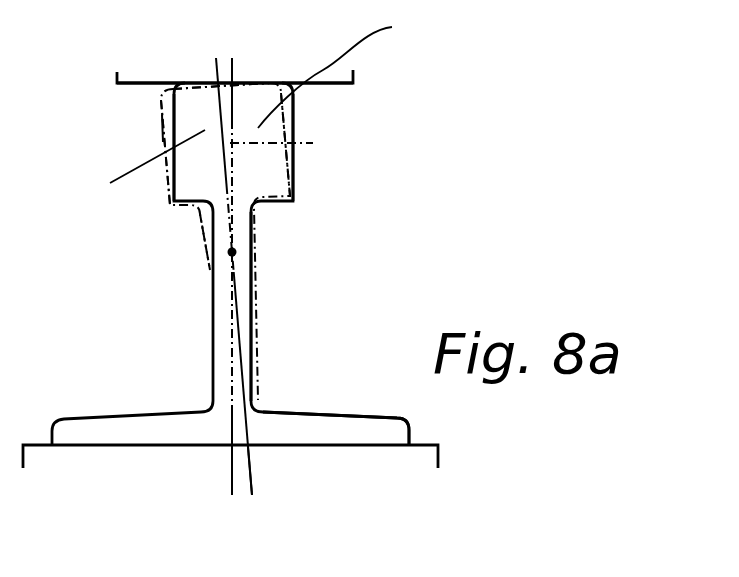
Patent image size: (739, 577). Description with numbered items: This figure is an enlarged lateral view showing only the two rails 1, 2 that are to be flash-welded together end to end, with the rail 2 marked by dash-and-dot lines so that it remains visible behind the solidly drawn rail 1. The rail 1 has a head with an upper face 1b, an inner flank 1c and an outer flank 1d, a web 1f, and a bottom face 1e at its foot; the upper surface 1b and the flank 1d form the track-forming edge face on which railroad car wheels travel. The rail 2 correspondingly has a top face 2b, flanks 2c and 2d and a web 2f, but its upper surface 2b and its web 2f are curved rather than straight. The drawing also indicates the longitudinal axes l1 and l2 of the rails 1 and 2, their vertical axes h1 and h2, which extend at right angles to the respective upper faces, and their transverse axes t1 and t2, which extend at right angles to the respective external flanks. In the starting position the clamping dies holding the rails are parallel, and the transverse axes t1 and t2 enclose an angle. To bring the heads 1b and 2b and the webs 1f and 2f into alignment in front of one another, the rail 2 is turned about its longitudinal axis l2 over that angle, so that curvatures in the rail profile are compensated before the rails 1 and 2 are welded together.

The rail 1 is at (227, 131).
The rail 2 is at (213, 136).
The upper face of the rail head 1b is at (268, 82).
The flank 1c is at (163, 108).
The outer flank of the rail head 1d is at (293, 128).
The bottom face of the rail 1e is at (343, 436).
The web 1f is at (253, 314).
The top face of the rail head 2b is at (204, 83).
The flank 2c is at (165, 184).
The outer flank of the rail head 2d is at (275, 200).
The web 2f is at (205, 273).
The longitudinal axis l1 is at (234, 252).
The longitudinal axis l2 is at (295, 276).
The transverse axis t1 is at (288, 147).
The transverse axis t2 is at (339, 69).
The vertical axis h1 is at (230, 480).
The vertical axis h2 is at (253, 483).